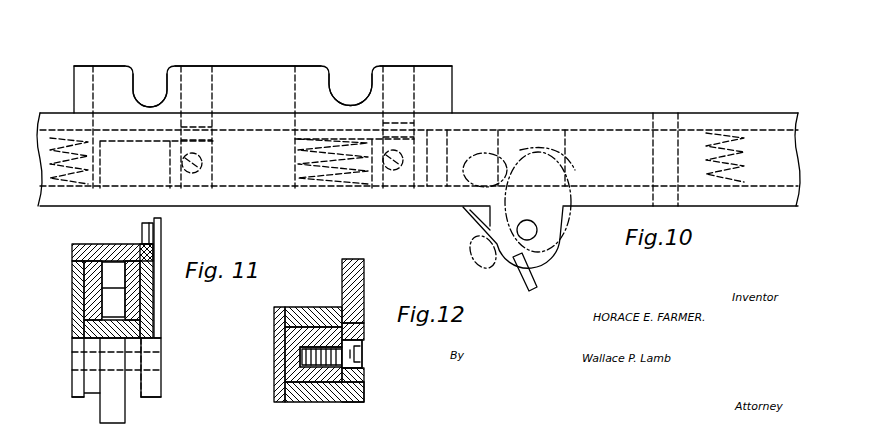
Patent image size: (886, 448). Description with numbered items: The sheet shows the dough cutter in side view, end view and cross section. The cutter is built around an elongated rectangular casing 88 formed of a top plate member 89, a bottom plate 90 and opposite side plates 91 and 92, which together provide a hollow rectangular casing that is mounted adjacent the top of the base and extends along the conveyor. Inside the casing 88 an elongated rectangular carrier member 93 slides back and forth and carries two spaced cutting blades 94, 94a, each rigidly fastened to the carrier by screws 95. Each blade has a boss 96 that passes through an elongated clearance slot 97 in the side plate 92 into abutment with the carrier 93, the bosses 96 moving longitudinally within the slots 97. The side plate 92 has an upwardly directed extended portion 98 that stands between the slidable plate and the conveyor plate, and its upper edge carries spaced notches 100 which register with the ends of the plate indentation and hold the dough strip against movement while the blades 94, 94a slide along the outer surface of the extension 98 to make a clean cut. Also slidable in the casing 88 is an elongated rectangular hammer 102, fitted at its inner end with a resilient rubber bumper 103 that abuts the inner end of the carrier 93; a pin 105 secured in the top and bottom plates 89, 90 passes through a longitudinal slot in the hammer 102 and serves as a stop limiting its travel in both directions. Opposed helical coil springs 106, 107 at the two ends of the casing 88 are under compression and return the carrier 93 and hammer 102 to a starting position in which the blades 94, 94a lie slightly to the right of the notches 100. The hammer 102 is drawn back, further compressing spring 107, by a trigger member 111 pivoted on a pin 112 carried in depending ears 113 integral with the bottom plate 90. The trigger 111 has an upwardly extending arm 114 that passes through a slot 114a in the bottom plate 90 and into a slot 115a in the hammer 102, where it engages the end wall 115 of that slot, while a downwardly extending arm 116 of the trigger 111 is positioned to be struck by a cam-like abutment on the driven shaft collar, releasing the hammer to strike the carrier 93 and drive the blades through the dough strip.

In FIG. 10, the casing 88 is at (641, 109).
In FIG. 11, the top plate member 89 is at (104, 244).
In FIG. 12, the top plate member 89 is at (310, 307).
In FIG. 11, the bottom plate 90 is at (93, 335).
In FIG. 12, the bottom plate 90 is at (328, 396).
In FIG. 11, the side plate 91 is at (73, 318).
In FIG. 12, the side plate 91 is at (274, 320).
In FIG. 11, the side plate 92 is at (153, 305).
In FIG. 12, the side plate 92 is at (365, 391).
In FIG. 12, the carrier member 93 is at (274, 378).
In FIG. 10, the cutting blade 94 is at (213, 75).
In FIG. 11, the cutting blade 94 is at (158, 233).
In FIG. 12, the cutting blade 94 is at (363, 272).
In FIG. 10, the cutting blade 94a is at (414, 82).
In FIG. 10, the screw 95 is at (203, 162).
In FIG. 12, the screw 95 is at (318, 367).
In FIG. 12, the boss 96 is at (363, 368).
In FIG. 10, the clearance slot 97 is at (100, 170).
In FIG. 12, the clearance slot 97 is at (362, 323).
In FIG. 10, the extended portion 98 is at (252, 78).
In FIG. 11, the extended portion 98 is at (149, 230).
In FIG. 10, the notch 100 is at (149, 78).
In FIG. 11, the hammer 102 is at (72, 299).
In FIG. 10, the bumper 103 is at (447, 147).
In FIG. 10, the pin 105 is at (680, 140).
In FIG. 10, the helical coil spring 106 is at (242, 127).
In FIG. 10, the helical coil spring 107 is at (733, 128).
In FIG. 10, the trigger member 111 is at (479, 222).
In FIG. 11, the trigger member 111 is at (105, 378).
In FIG. 10, the pin 112 is at (537, 233).
In FIG. 11, the pin 112 is at (157, 358).
In FIG. 10, the depending ear 113 is at (562, 225).
In FIG. 11, the depending ear 113 is at (75, 390).
In FIG. 10, the upwardly extending arm 114 is at (483, 155).
In FIG. 11, the upwardly extending arm 114 is at (72, 274).
In FIG. 10, the slot 114a is at (465, 193).
In FIG. 10, the end wall 115 is at (505, 152).
In FIG. 11, the slot 115a is at (112, 285).
In FIG. 10, the downwardly extending arm 116 is at (514, 280).
In FIG. 11, the downwardly extending arm 116 is at (120, 413).